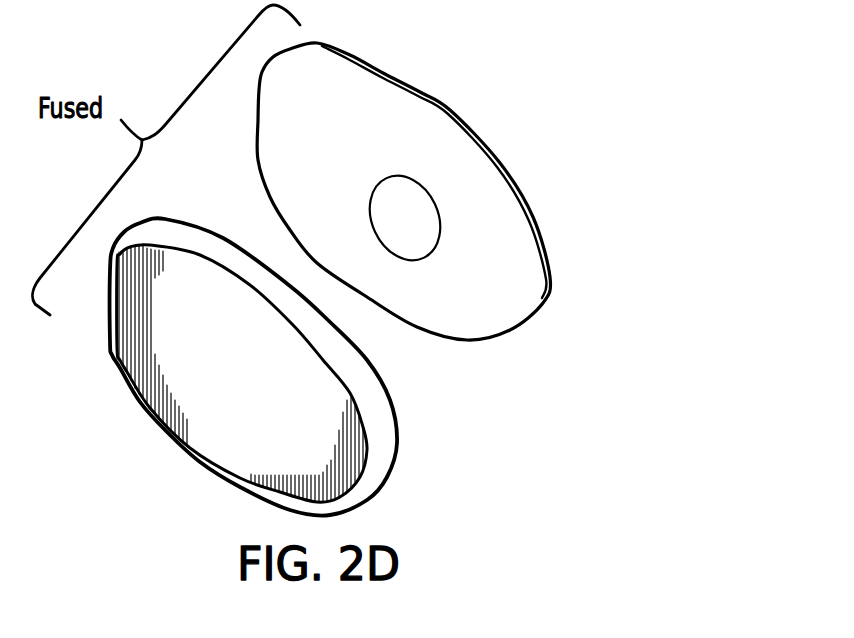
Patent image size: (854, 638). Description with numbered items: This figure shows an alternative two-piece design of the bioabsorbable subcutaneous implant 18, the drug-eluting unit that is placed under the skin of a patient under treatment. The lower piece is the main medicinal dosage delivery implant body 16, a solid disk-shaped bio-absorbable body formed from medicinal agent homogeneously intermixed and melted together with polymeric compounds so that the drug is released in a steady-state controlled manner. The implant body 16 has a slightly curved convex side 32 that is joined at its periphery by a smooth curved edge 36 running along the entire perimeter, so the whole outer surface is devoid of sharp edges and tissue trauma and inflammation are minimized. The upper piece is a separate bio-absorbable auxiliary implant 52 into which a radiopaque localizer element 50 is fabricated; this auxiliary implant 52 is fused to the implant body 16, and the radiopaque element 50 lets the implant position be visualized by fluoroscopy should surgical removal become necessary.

The implant body 16 is at (258, 370).
The implant 18 is at (673, 307).
The convex side 32 is at (205, 382).
The curved edge 36 is at (373, 485).
The radiopaque localizer element 50 is at (435, 235).
The auxiliary implant 52 is at (489, 142).